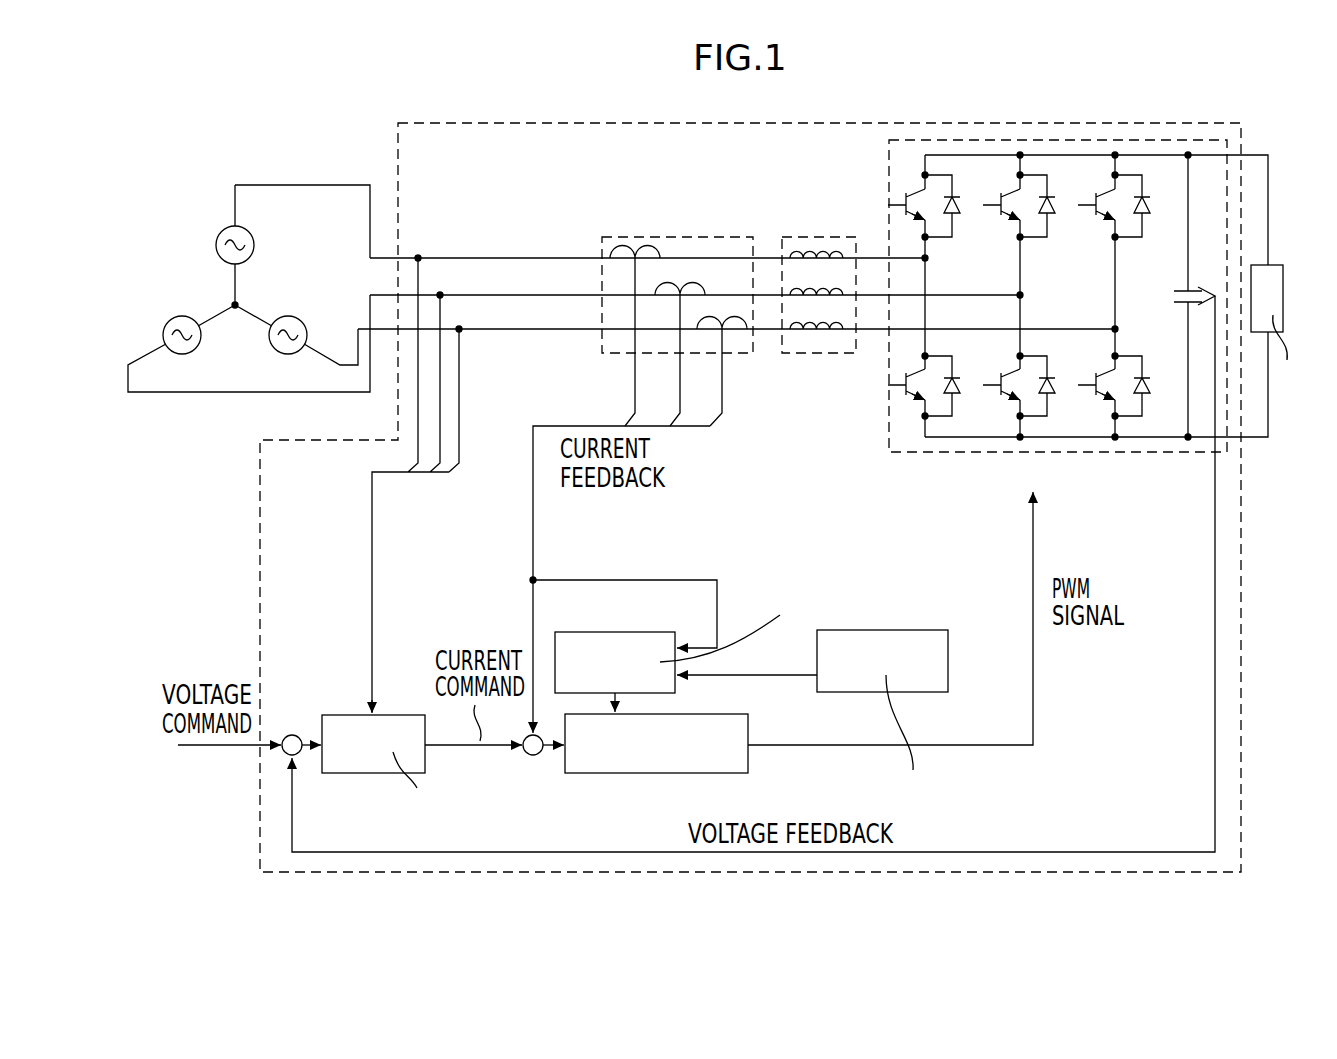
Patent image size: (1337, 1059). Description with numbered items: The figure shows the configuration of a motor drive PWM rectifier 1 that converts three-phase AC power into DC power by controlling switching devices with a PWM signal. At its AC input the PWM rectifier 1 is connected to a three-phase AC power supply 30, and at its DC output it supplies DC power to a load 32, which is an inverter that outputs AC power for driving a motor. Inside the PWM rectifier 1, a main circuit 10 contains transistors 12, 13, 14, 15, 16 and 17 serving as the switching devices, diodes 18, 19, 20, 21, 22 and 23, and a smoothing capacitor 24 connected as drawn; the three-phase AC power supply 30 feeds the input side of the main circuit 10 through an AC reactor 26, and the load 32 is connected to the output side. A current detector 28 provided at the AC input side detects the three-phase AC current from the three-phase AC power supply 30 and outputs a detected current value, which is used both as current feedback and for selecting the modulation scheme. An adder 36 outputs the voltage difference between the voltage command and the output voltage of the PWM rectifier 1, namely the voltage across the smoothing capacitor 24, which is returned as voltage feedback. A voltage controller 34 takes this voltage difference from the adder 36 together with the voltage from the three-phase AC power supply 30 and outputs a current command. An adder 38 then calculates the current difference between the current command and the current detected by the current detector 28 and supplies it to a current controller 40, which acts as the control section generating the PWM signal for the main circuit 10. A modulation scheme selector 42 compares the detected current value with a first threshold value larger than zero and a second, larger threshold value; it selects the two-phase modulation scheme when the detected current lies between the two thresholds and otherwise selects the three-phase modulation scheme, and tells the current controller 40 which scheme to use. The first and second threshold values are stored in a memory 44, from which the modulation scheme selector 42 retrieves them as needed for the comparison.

The PWM rectifier 1 is at (636, 122).
The main circuit 10 is at (949, 137).
The transistor 12 is at (899, 192).
The transistor 13 is at (897, 396).
The transistor 14 is at (992, 216).
The transistor 15 is at (992, 394).
The transistor 16 is at (1087, 216).
The transistor 17 is at (1087, 394).
The diode 18 is at (962, 204).
The diode 19 is at (962, 386).
The diode 20 is at (1056, 205).
The diode 21 is at (1058, 386).
The diode 22 is at (1151, 205).
The diode 23 is at (1150, 386).
The smoothing capacitor 24 is at (1181, 289).
The AC reactor 26 is at (818, 236).
The current detector 28 is at (652, 236).
The three-phase AC power supply 30 is at (232, 169).
The load 32 is at (1274, 265).
The voltage controller 34 is at (385, 774).
The adder 36 is at (295, 734).
The adder 38 is at (538, 754).
The current controller 40 is at (628, 774).
The modulation scheme selector 42 is at (636, 632).
The memory 44 is at (913, 630).